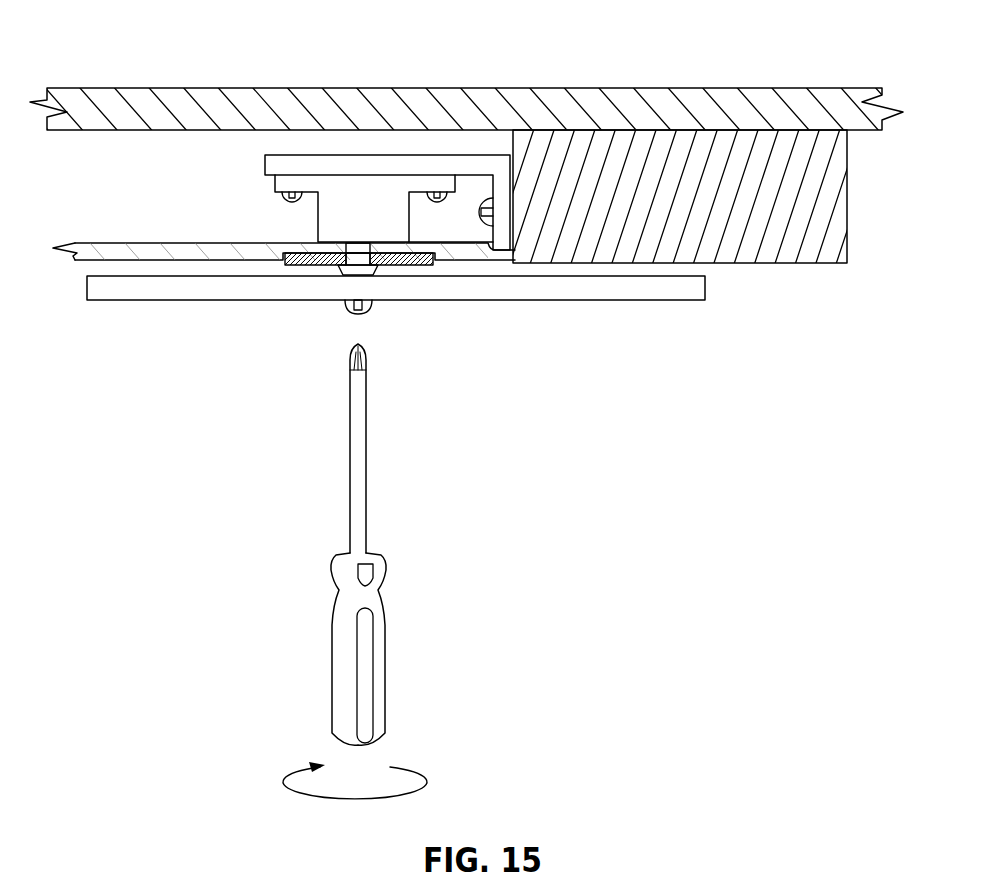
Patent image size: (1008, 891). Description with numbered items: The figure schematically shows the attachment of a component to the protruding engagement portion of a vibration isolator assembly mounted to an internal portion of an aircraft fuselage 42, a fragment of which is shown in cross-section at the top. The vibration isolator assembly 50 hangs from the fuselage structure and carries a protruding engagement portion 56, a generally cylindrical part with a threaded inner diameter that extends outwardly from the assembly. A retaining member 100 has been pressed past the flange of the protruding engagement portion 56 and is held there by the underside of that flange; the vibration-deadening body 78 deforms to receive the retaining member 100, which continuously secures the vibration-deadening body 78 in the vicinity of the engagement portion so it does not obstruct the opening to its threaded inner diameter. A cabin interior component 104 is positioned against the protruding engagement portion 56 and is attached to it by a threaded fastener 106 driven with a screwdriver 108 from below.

The fuselage 42 is at (343, 67).
The vibration isolator assembly 50 is at (318, 202).
The protruding engagement portion 56 is at (360, 246).
The vibration-deadening body 78 is at (163, 243).
The retaining member 100 is at (313, 265).
The cabin interior component 104 is at (167, 300).
The threaded fastener 106 is at (373, 303).
The screwdriver 108 is at (385, 645).